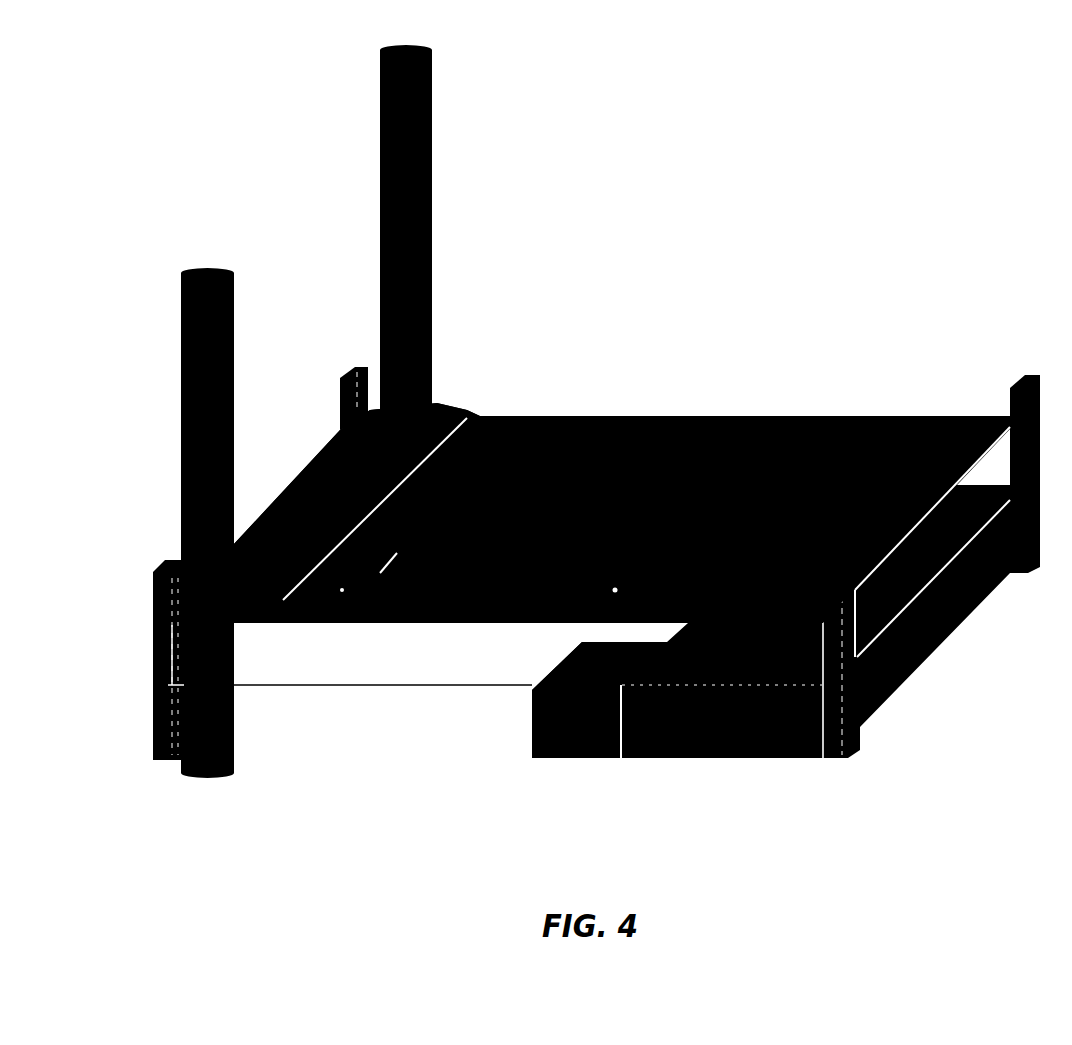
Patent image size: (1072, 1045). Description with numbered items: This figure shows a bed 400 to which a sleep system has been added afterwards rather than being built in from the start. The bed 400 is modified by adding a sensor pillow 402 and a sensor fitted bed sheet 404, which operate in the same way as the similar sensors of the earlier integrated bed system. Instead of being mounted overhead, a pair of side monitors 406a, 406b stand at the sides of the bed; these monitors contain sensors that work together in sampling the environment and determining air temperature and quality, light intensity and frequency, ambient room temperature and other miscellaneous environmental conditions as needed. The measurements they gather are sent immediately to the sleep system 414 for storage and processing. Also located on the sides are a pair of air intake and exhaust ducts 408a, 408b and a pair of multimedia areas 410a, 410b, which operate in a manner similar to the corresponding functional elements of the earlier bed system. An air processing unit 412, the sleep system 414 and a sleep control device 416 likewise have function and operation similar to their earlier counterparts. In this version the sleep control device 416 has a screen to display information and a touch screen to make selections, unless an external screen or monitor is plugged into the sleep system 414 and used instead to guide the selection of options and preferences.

The bed 400 is at (566, 425).
The sensor pillow 402 is at (350, 463).
The sensor fitted bed sheet 404 is at (621, 513).
The side monitor 406a is at (190, 320).
The side monitor 406b is at (392, 127).
The air intake and exhaust duct 408a is at (195, 480).
The air intake and exhaust duct 408b is at (392, 250).
The multimedia area 410a is at (198, 570).
The multimedia area 410b is at (397, 350).
The air processing unit 412 is at (767, 738).
The sleep system 414 is at (593, 748).
The sleep control device 416 is at (395, 585).